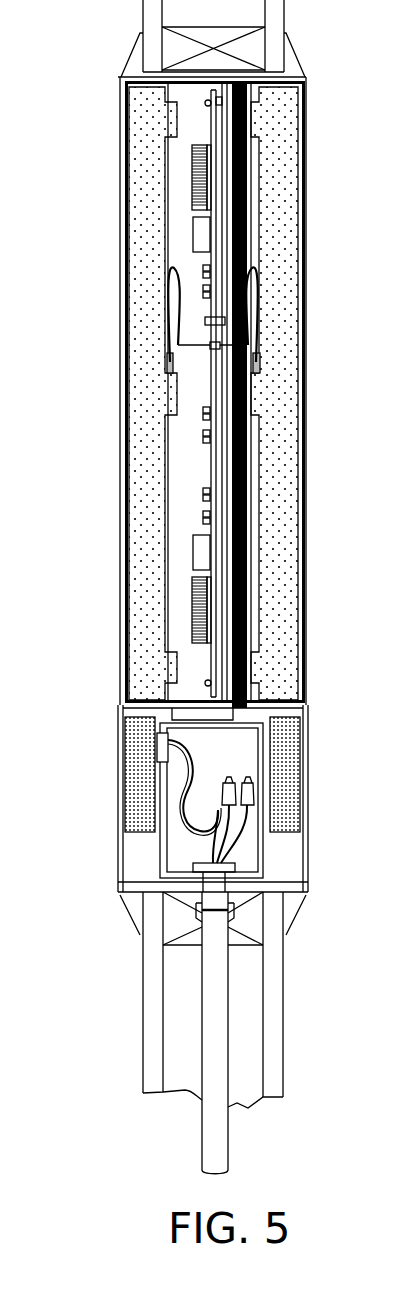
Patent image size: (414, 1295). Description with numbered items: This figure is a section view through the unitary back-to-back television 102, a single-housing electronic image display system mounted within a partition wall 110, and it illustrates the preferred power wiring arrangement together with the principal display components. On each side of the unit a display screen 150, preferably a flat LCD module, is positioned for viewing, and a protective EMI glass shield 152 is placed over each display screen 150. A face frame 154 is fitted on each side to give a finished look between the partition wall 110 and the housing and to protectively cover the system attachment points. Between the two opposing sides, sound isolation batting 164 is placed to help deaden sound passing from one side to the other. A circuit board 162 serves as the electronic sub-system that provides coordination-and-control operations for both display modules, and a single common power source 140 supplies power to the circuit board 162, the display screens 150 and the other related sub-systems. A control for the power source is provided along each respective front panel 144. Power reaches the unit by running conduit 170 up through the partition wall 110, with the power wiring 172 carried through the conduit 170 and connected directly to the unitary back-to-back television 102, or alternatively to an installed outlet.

The unitary back-to-back television 102 is at (112, 662).
The partition wall 110 is at (283, 1022).
The power source 140 is at (133, 747).
The front panel 144 is at (118, 850).
The display screen 150 is at (140, 265).
The EMI glass shield 152 is at (126, 171).
The face frame 154 is at (128, 58).
The circuit board 162 is at (215, 462).
The sound isolation batting 164 is at (249, 123).
The conduit 170 is at (215, 1015).
The power wiring 172 is at (157, 812).